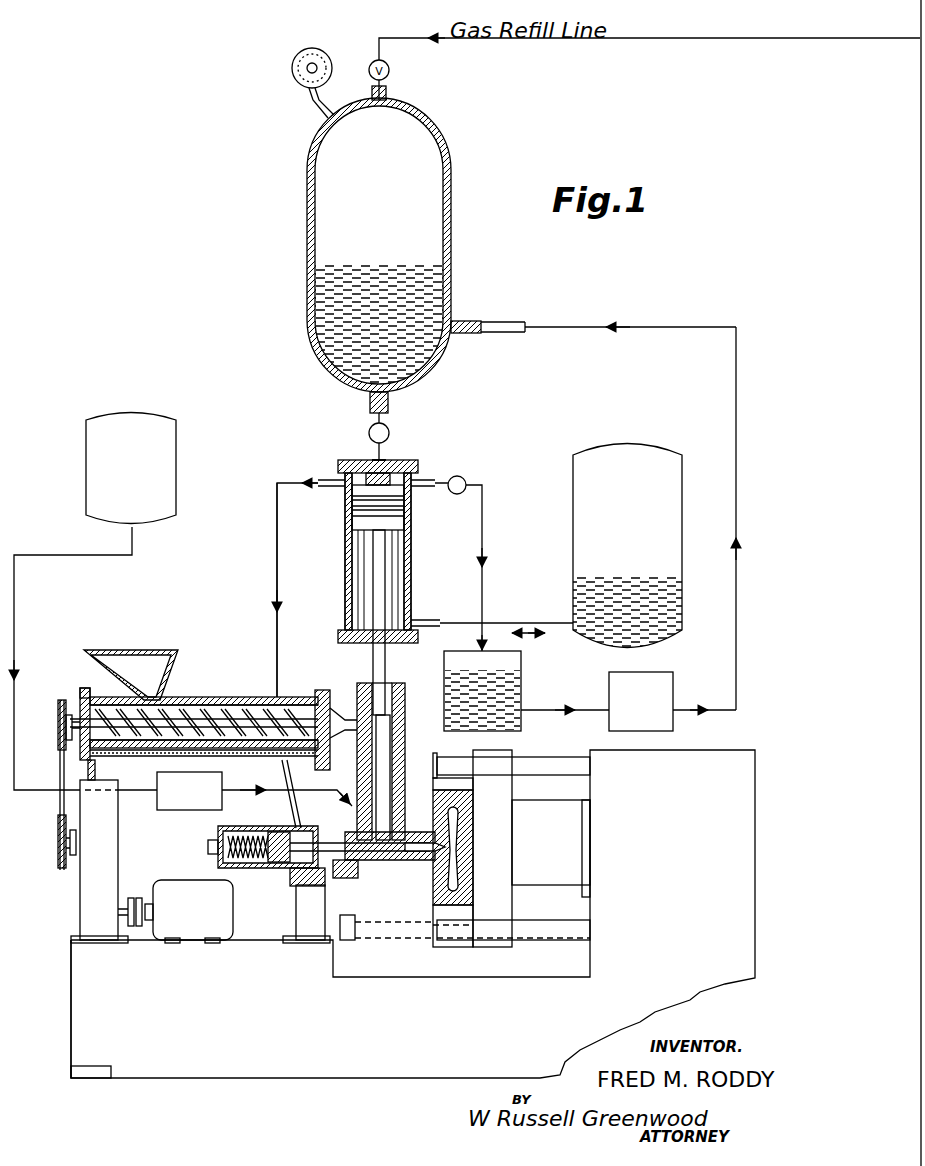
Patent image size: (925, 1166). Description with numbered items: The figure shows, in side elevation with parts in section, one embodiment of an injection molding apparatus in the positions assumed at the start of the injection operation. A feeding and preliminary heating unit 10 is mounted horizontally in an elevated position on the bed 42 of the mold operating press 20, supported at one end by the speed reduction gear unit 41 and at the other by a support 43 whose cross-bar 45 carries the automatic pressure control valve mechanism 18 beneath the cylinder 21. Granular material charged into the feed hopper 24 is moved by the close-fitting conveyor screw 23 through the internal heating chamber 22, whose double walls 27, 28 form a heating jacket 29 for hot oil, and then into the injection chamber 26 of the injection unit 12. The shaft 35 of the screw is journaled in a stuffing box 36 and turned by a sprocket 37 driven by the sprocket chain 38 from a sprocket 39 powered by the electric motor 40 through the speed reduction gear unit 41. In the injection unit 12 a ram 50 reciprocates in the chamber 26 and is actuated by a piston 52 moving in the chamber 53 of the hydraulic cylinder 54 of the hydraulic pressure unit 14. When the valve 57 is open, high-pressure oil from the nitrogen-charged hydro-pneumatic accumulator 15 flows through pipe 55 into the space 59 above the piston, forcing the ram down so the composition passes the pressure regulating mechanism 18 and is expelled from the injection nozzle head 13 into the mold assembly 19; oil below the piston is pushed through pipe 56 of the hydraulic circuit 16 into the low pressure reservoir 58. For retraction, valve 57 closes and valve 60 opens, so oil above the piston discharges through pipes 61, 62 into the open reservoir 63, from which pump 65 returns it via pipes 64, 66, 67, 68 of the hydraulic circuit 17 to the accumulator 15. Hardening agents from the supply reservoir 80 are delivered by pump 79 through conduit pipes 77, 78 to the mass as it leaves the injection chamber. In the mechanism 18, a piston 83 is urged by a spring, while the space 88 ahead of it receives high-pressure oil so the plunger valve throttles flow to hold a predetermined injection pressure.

The feeding and preliminary heating unit 10 is at (181, 695).
The injection unit 12 is at (406, 700).
The injection nozzle head 13 is at (352, 860).
The hydraulic pressure unit 14 is at (412, 542).
The hydro-pneumatic accumulator 15 is at (304, 262).
The hydraulic circuit 16 is at (506, 622).
The hydraulic circuit 17 is at (734, 398).
The automatic pressure control valve mechanism 18 is at (240, 868).
The mold assembly 19 is at (446, 905).
The mold operating press 20 is at (286, 1082).
The cylinder 21 is at (298, 700).
The internal heating chamber 22 is at (150, 756).
The conveyor screw 23 is at (252, 756).
The feed hopper 24 is at (128, 662).
The injection chamber 26 is at (388, 750).
The wall 27 is at (208, 697).
The wall 28 is at (250, 697).
The heating jacket 29 is at (115, 860).
The shaft 35 is at (78, 700).
The stuffing box 36 is at (82, 750).
The sprocket 37 is at (58, 724).
The sprocket chain 38 is at (61, 812).
The sprocket 39 is at (58, 856).
The electric motor 40 is at (178, 880).
The speed reduction gear unit 41 is at (80, 909).
The bed 42 is at (82, 1011).
The support 43 is at (296, 922).
The cross-bar 45 is at (322, 886).
The ram 50 is at (386, 680).
The piston 52 is at (362, 513).
The chamber 53 is at (360, 590).
The hydraulic cylinder 54 is at (413, 587).
The pipe 55 is at (388, 458).
The pipe 56 is at (432, 622).
The valve 57 is at (368, 433).
The low pressure reservoir 58 is at (597, 460).
The space 59 is at (378, 470).
The valve 60 is at (466, 478).
The pipe 61 is at (438, 480).
The pipe 62 is at (483, 546).
The open reservoir 63 is at (512, 725).
The pipe 64 is at (545, 704).
The pump 65 is at (648, 682).
The pipe 66 is at (715, 710).
The pipe 67 is at (735, 578).
The pipe 68 is at (620, 326).
The conduit pipe 77 is at (245, 822).
The conduit pipe 78 is at (14, 612).
The pump 79 is at (195, 810).
The supply reservoir 80 is at (86, 466).
The piston 83 is at (270, 840).
The space 88 is at (276, 562).